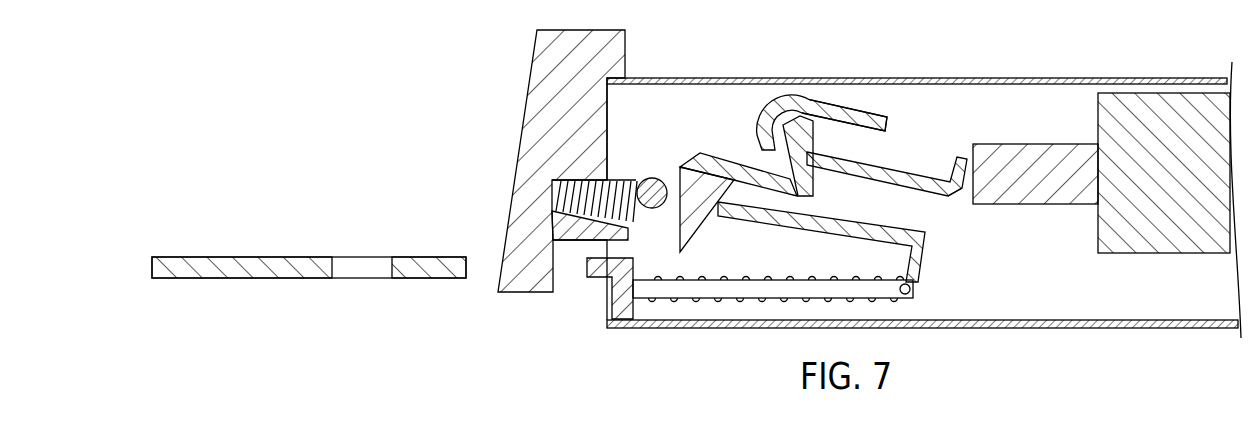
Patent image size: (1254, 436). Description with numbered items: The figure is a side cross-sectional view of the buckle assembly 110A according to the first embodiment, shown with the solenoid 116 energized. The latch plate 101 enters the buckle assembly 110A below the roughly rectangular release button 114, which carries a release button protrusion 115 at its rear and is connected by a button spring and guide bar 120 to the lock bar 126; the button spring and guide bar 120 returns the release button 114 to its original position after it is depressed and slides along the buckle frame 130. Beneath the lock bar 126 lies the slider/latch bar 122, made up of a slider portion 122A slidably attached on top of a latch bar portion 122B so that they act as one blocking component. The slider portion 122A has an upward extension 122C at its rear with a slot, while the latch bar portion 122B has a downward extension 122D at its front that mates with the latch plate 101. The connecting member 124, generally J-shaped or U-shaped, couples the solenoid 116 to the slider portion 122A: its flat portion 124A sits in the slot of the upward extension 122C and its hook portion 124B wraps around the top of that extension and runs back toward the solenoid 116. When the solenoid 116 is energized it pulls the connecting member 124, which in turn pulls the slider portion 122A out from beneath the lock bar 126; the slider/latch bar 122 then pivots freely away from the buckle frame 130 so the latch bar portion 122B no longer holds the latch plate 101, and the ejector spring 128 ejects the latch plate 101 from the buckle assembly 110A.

The latch plate 101 is at (293, 262).
The buckle assembly 110A is at (948, 56).
The release button 114 is at (578, 42).
The release button protrusion 115 is at (540, 233).
The solenoid 116 is at (1145, 169).
The button spring and guide bar 120 is at (580, 182).
The slider/latch bar 122 is at (778, 166).
The slider portion 122A is at (808, 182).
The latch bar portion 122B is at (745, 214).
The upward extension 122C is at (815, 126).
The downward extension 122D is at (680, 226).
The connecting member 124 is at (884, 144).
The flat portion 124A is at (940, 198).
The hook portion 124B is at (872, 110).
The lock bar 126 is at (653, 179).
The ejector spring 128 is at (645, 320).
The buckle frame 130 is at (740, 332).